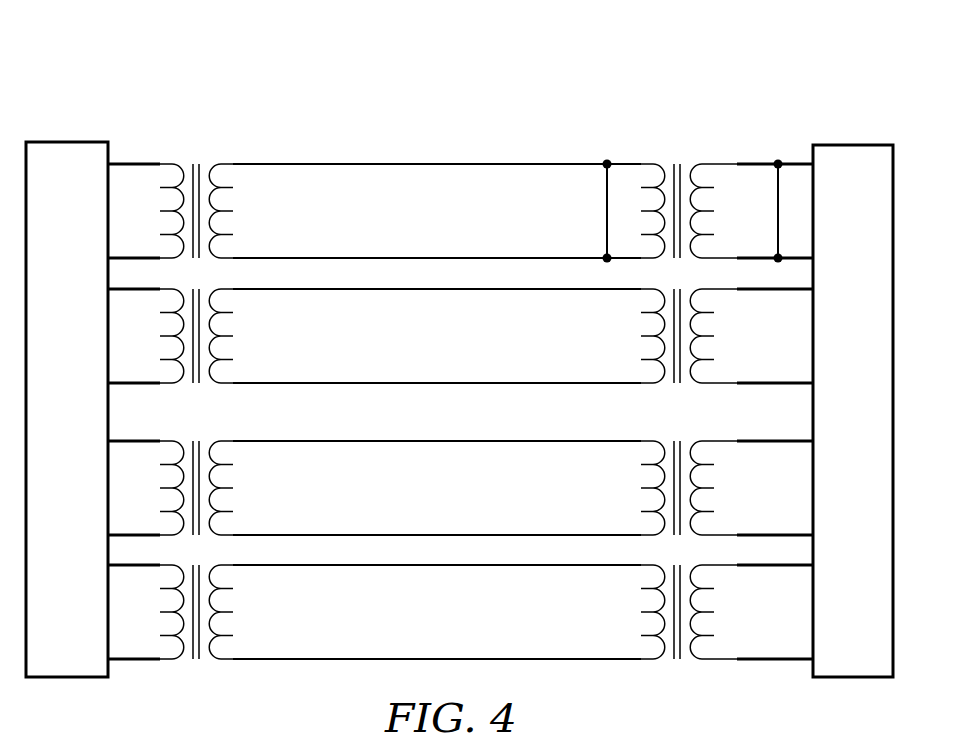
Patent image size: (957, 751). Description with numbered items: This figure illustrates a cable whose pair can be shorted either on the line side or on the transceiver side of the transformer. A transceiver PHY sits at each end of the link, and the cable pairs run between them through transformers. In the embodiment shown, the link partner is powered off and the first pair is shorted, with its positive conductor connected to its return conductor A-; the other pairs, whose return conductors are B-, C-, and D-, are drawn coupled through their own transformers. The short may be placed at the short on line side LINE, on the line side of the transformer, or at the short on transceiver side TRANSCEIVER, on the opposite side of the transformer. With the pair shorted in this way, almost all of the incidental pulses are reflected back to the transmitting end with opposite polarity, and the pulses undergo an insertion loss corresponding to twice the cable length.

The physical layer transceiver PHY is at (459, 409).
The A− conductor A- is at (460, 240).
The pair B negative conductor B- is at (460, 365).
The pair C negative conductor C- is at (460, 517).
The pair D negative conductor D- is at (460, 641).
The short on line side LINE is at (610, 193).
The short on transceiver side TRANSCEIVER is at (781, 200).